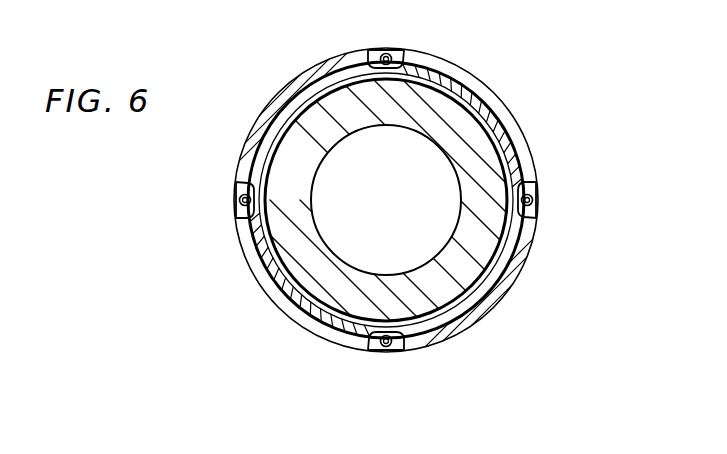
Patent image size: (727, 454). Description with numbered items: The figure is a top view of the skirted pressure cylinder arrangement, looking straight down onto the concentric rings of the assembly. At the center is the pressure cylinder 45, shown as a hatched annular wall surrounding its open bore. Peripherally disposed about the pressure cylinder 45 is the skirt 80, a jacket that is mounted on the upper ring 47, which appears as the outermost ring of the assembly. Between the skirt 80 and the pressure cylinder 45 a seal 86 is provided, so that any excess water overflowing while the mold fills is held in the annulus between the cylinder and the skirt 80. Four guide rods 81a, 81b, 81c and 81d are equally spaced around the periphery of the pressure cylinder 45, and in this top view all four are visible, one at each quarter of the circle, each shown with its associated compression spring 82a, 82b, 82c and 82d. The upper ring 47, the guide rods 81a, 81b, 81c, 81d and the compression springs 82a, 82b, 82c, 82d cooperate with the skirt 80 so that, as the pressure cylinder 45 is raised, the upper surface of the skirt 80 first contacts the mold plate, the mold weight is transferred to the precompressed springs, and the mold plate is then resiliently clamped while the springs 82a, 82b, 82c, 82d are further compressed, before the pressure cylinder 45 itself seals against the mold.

The pressure cylinder 45 is at (309, 205).
The upper ring 47 is at (487, 307).
The skirt 80 is at (482, 108).
The seal 86 is at (524, 146).
The guide rod 81a is at (233, 199).
The guide rod 81b is at (373, 351).
The guide rod 81c is at (533, 186).
The guide rod 81d is at (376, 51).
The compression spring 82a is at (238, 208).
The compression spring 82b is at (392, 351).
The compression spring 82c is at (535, 216).
The compression spring 82d is at (392, 50).